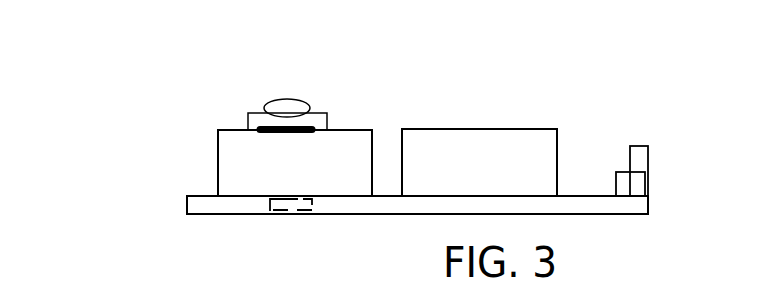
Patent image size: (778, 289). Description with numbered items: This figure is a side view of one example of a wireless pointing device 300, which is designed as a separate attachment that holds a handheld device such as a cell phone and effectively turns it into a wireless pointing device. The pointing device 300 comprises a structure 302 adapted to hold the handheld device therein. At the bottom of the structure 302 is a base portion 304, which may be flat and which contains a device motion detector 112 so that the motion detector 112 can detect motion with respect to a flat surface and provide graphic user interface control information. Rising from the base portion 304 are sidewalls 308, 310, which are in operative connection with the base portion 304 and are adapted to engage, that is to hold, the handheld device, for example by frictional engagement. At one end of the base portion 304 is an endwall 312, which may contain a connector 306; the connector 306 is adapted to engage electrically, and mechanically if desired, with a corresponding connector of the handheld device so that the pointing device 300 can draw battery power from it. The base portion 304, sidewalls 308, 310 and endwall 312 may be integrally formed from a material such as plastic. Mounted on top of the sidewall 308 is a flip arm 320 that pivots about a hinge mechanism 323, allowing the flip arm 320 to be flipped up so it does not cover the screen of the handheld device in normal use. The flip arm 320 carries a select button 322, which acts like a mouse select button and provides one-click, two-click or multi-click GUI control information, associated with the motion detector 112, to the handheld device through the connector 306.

The wireless pointing device 300 is at (663, 61).
The structure 302 is at (622, 226).
The base portion 304 is at (650, 210).
The connector 306 is at (617, 183).
The sidewall 308 is at (357, 128).
The sidewall 310 is at (493, 128).
The endwall 312 is at (648, 153).
The flip arm 320 is at (256, 112).
The select button 322 is at (284, 99).
The hinge mechanism 323 is at (313, 112).
The device motion detector 112 is at (250, 224).